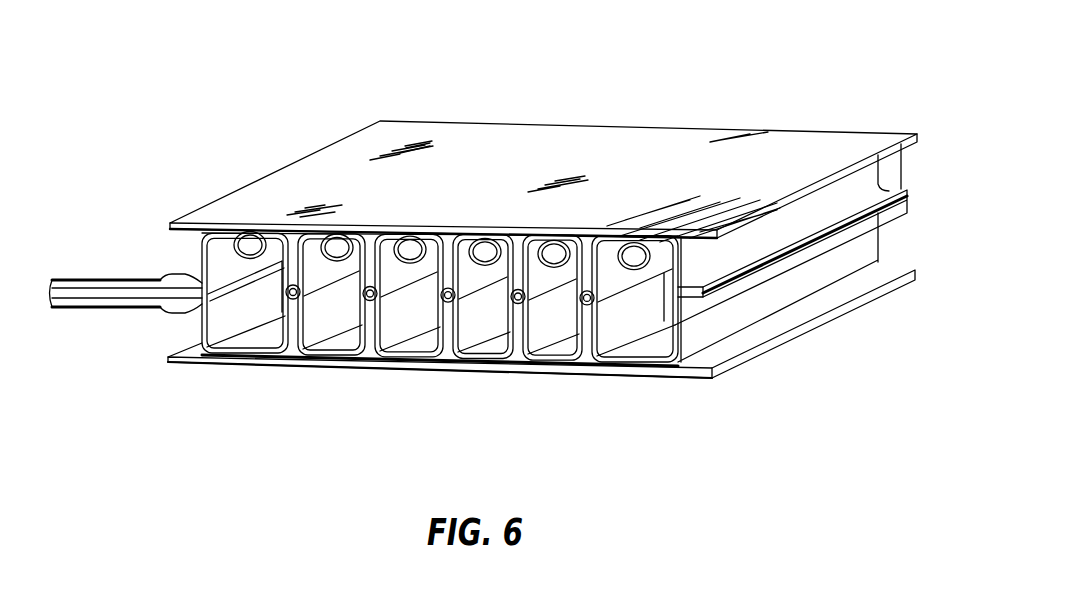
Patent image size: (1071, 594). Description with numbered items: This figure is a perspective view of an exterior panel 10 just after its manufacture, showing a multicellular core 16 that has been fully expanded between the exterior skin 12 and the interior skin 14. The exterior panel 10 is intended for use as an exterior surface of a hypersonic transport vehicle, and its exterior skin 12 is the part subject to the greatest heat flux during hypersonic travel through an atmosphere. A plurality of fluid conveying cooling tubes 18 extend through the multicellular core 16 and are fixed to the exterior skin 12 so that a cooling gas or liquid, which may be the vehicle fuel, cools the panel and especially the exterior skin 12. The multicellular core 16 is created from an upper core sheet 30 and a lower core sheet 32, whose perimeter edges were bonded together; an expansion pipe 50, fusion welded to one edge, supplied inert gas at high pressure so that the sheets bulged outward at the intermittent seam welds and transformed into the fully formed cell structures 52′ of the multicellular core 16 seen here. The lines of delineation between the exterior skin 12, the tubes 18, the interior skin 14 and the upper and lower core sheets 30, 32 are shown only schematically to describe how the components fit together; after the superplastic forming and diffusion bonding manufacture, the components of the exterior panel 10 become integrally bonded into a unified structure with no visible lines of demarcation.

The exterior panel 10 is at (270, 94).
The exterior skin 12 is at (823, 135).
The interior skin 14 is at (862, 290).
The multicellular core 16 is at (583, 284).
The fluid conveying cooling tubes 18 is at (252, 233).
The upper core sheet 30 is at (898, 190).
The lower core sheet 32 is at (902, 214).
The expansion pipe 50 is at (107, 282).
The fully formed cell structures 52′ is at (260, 368).